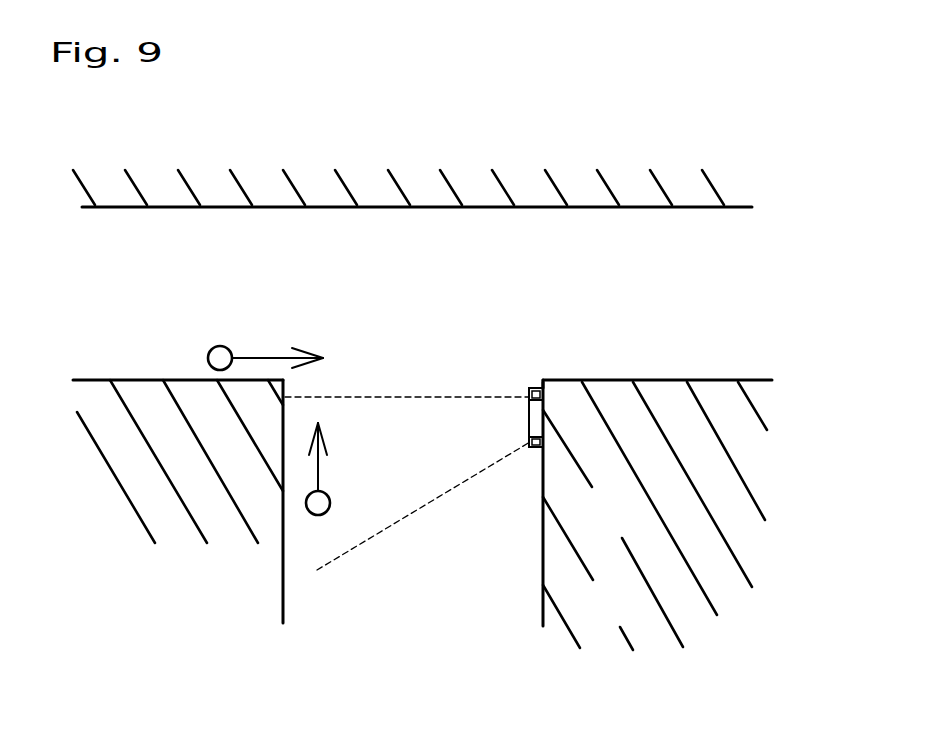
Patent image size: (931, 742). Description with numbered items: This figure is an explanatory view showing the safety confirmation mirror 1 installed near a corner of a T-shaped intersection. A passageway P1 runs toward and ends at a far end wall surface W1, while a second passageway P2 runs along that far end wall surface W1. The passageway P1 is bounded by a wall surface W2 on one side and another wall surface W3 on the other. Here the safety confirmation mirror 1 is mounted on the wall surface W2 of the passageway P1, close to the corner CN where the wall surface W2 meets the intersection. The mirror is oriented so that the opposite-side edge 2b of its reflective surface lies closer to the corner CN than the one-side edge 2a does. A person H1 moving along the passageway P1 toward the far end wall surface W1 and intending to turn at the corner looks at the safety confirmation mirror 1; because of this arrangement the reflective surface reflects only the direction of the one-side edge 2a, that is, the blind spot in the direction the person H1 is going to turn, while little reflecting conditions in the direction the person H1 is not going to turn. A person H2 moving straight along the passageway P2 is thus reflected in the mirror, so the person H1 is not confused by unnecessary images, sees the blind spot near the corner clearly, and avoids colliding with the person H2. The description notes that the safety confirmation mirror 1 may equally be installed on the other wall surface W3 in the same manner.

The safety confirmation mirror 1 is at (527, 418).
The one-side edge 2a is at (533, 449).
The opposite-side edge 2b is at (535, 386).
The corner CN is at (543, 383).
The passageway P1 is at (532, 522).
The passageway P2 is at (628, 222).
The far end wall surface W1 is at (165, 208).
The wall surface W2 is at (543, 557).
The wall surface W3 is at (283, 530).
The person H1 is at (263, 340).
The person H2 is at (333, 470).